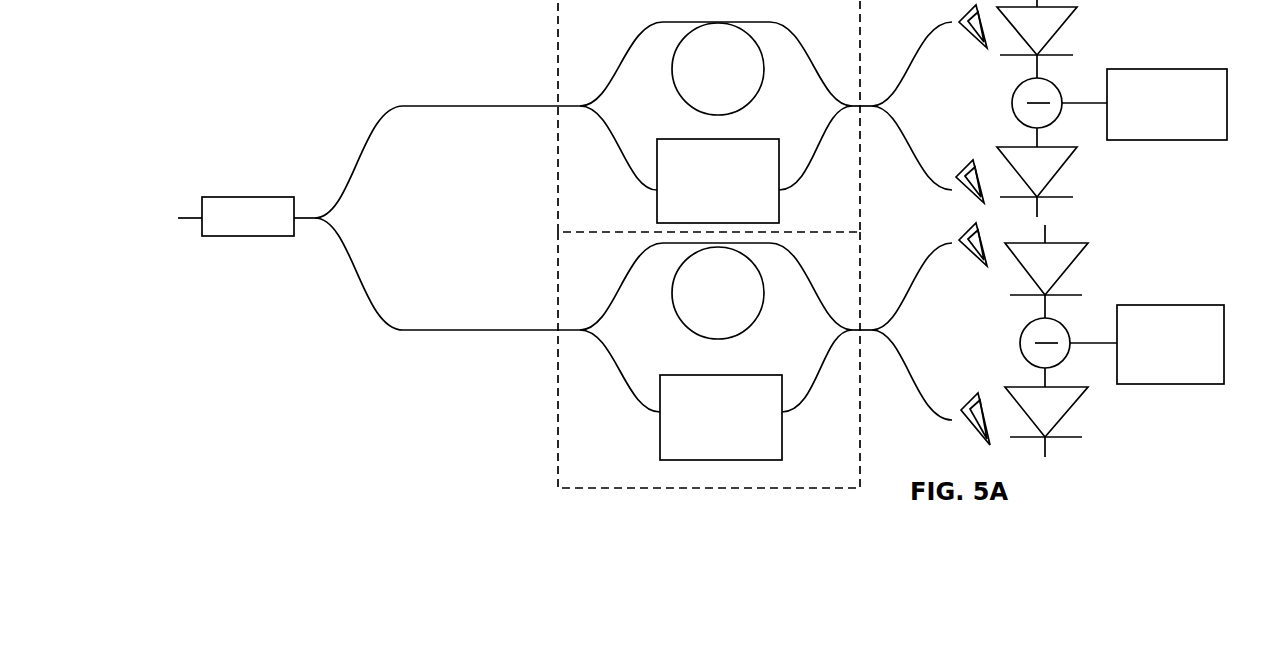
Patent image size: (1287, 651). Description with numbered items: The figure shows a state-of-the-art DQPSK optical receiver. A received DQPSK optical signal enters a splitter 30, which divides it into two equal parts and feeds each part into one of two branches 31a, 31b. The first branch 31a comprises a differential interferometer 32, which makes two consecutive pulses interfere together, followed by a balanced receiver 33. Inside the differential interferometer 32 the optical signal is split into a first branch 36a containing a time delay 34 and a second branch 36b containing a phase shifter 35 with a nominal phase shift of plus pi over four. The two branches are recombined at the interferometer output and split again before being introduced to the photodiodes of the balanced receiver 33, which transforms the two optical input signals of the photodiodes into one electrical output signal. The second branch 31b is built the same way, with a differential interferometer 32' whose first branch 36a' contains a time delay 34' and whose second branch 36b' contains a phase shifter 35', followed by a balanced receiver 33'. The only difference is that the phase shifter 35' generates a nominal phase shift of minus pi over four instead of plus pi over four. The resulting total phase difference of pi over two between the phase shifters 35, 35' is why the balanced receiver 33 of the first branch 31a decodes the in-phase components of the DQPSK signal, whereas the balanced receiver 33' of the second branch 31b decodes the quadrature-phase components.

The splitter 30 is at (275, 197).
The first branch 31a is at (528, 105).
The second branch 31b is at (528, 333).
The differential interferometer 32 is at (737, 116).
The differential interferometer 32' is at (736, 360).
The balanced receiver 33 is at (1091, 108).
The balanced receiver 33' is at (1092, 317).
The time delay 34 is at (703, 73).
The time delay 34' is at (739, 301).
The phase shifter 35 is at (635, 186).
The phase shifter 35' is at (647, 423).
The first branch 36a is at (624, 64).
The second branch 36b is at (623, 148).
The first branch 36a' is at (617, 286).
The second branch 36b' is at (634, 378).